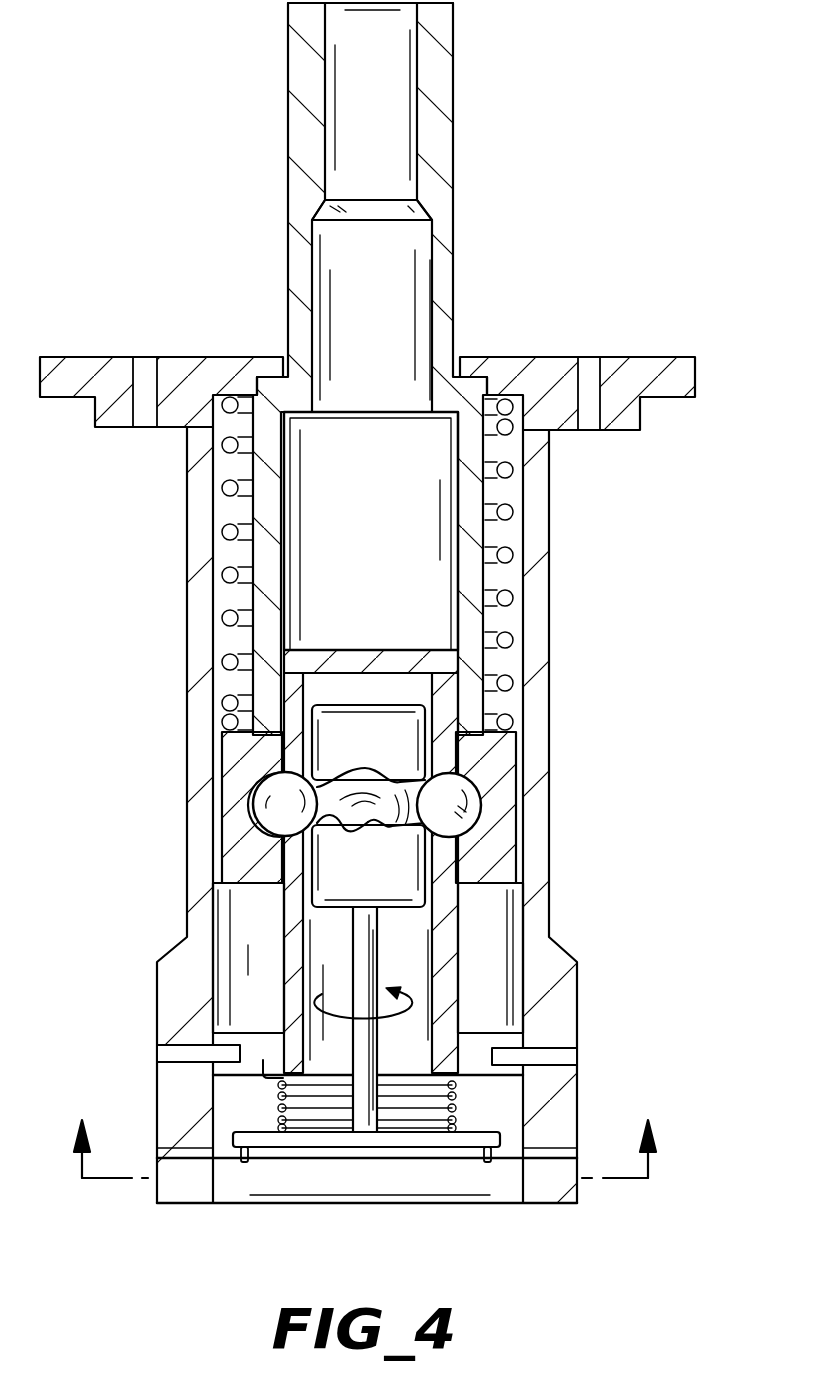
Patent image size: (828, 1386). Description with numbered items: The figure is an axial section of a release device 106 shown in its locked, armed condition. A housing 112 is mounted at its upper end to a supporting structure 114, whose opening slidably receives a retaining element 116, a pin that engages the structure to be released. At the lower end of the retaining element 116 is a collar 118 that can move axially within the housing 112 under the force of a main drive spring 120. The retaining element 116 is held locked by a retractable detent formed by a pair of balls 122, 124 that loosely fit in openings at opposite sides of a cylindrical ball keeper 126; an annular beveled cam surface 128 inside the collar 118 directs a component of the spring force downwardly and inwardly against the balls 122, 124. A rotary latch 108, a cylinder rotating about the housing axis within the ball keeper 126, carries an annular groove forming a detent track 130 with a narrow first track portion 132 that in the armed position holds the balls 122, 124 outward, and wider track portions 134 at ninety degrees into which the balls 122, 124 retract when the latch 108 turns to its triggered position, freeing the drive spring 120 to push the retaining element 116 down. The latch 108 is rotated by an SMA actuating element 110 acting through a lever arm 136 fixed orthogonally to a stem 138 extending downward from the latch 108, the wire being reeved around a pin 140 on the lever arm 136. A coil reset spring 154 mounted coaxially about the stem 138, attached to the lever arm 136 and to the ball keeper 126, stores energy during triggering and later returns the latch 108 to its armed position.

The release device 106 is at (367, 633).
The rotary latch 108 is at (407, 728).
The SMA actuating element 110 is at (503, 1168).
The housing 112 is at (195, 527).
The supporting structure 114 is at (552, 372).
The retaining element 116 is at (297, 278).
The collar 118 is at (500, 766).
The main drive spring 120 is at (217, 672).
The ball 122 is at (253, 838).
The ball 124 is at (483, 810).
The cylindrical ball keeper 126 is at (292, 990).
The annular beveled cam surface 128 is at (250, 800).
The detent track 130 is at (377, 752).
The first track portion 132 is at (347, 827).
The wider track portion 134 is at (387, 828).
The lever arm 136 is at (417, 1138).
The stem 138 is at (362, 968).
The pin 140 is at (240, 1163).
The coil reset spring 154 is at (320, 1103).